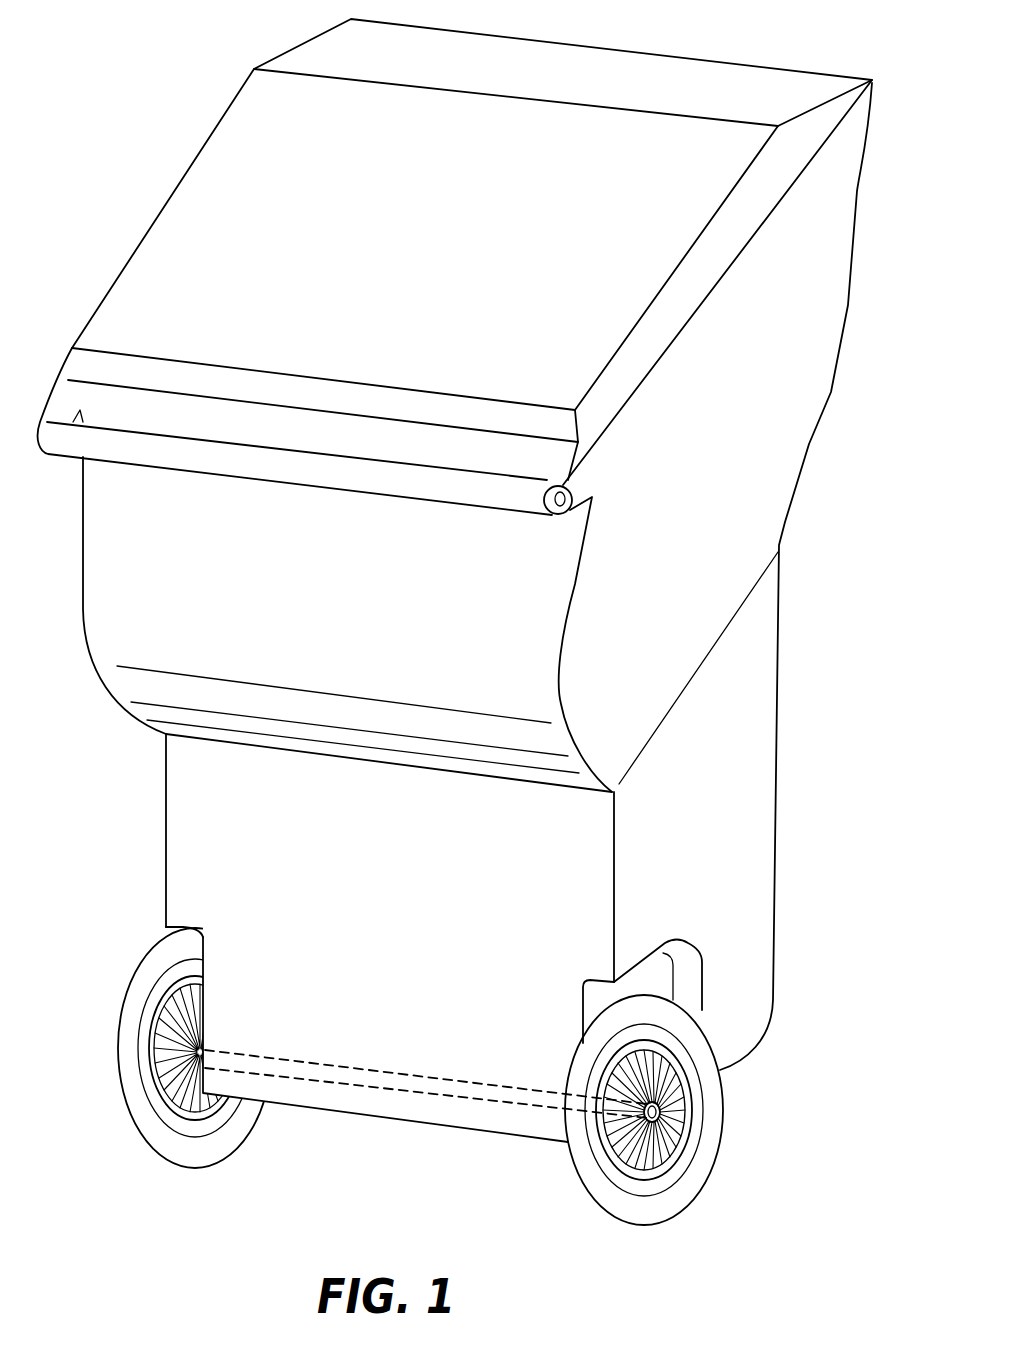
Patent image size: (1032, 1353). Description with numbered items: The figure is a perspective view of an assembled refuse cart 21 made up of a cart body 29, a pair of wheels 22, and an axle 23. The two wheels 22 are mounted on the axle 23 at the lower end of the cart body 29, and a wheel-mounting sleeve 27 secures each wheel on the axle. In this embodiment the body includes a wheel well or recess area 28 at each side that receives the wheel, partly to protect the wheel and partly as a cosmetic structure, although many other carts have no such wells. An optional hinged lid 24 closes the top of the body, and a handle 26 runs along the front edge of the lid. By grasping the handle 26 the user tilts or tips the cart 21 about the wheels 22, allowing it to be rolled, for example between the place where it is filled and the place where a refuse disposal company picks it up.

The cart 21 is at (813, 452).
The wheels 22 is at (150, 1143).
The axle 23 is at (387, 1070).
The hinged lid 24 is at (161, 228).
The handle 26 is at (268, 466).
The wheel-mounting sleeve 27 is at (672, 1113).
The wheel well 28 is at (173, 932).
The cart body 29 is at (768, 737).